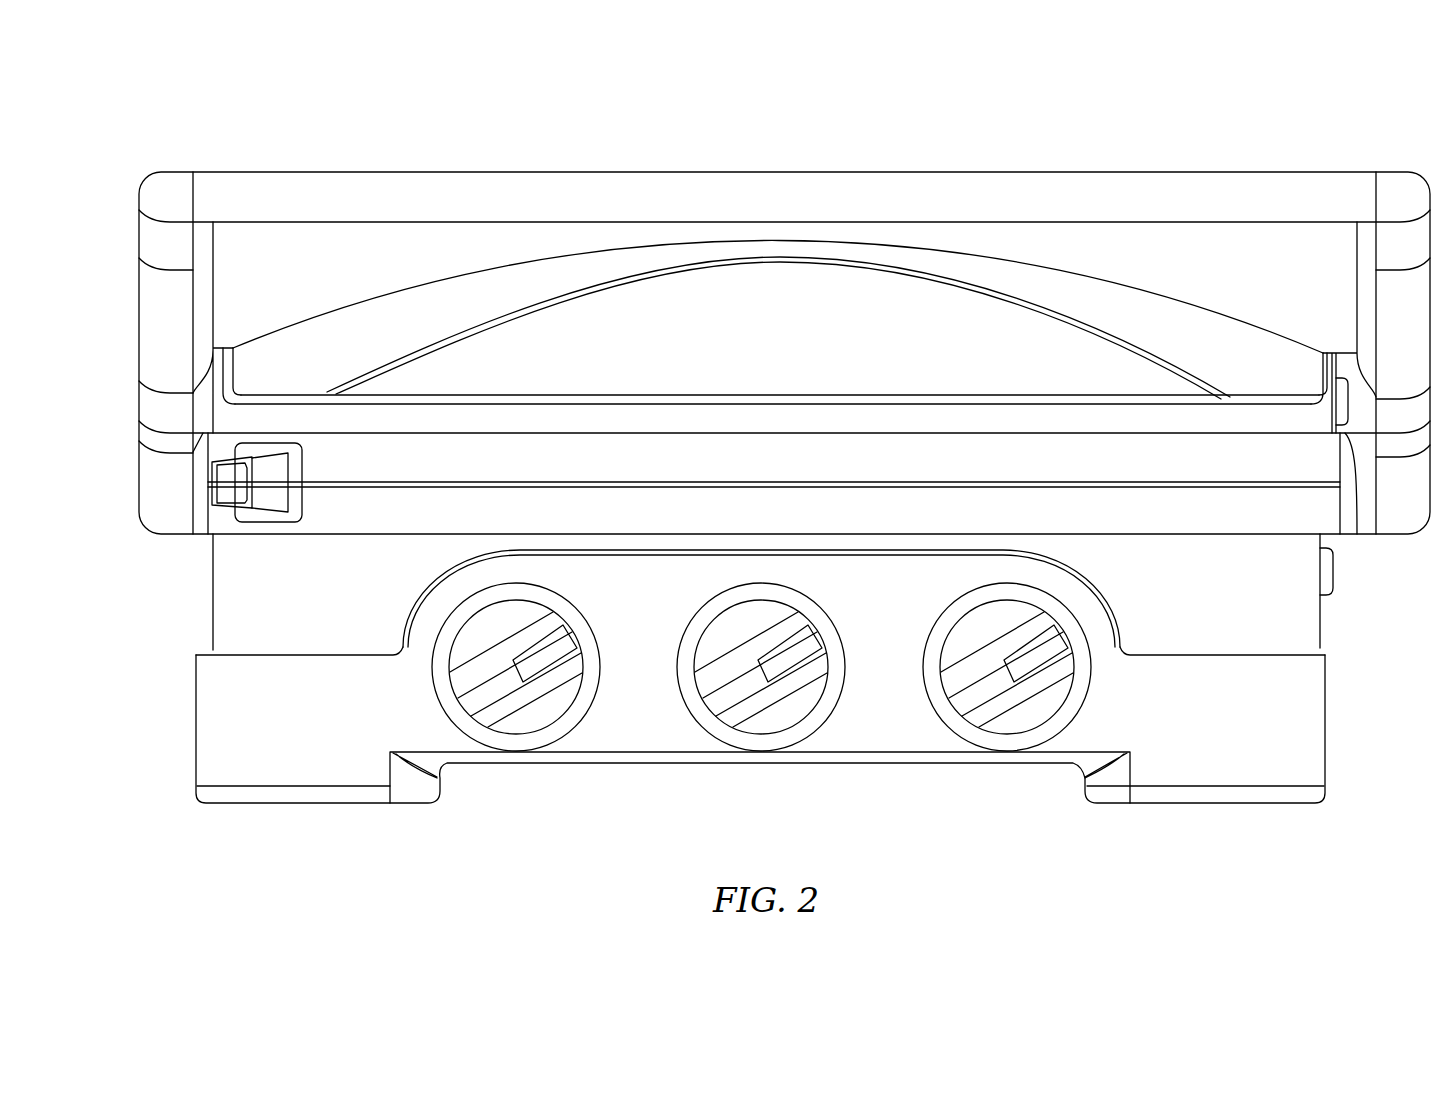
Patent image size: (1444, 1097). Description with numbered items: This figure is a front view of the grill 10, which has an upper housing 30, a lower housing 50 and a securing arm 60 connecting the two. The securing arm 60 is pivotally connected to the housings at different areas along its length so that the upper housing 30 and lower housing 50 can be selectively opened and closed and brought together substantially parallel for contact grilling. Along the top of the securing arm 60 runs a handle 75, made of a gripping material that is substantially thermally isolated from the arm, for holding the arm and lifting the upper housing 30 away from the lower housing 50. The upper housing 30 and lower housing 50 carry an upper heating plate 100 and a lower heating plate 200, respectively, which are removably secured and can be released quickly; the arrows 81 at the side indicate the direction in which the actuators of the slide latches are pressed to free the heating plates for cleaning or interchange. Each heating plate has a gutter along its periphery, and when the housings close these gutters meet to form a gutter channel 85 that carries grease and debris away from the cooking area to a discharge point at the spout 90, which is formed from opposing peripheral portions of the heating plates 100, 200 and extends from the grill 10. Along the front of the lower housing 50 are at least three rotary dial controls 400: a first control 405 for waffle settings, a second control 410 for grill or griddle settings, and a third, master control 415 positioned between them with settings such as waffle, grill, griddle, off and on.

The grill 10 is at (1220, 146).
The upper housing 30 is at (1043, 335).
The lower housing 50 is at (1297, 718).
The securing arm 60 is at (165, 298).
The handle 75 is at (657, 185).
The arrows 81 is at (1348, 568).
The gutter channel 85 is at (226, 497).
The spout 90 is at (263, 498).
The upper heating plate 100 is at (1170, 453).
The lower heating plate 200 is at (1258, 518).
The rotary dial controls 400 is at (882, 807).
The first control 405 is at (508, 740).
The second control 410 is at (1007, 742).
The third control 415 is at (768, 743).